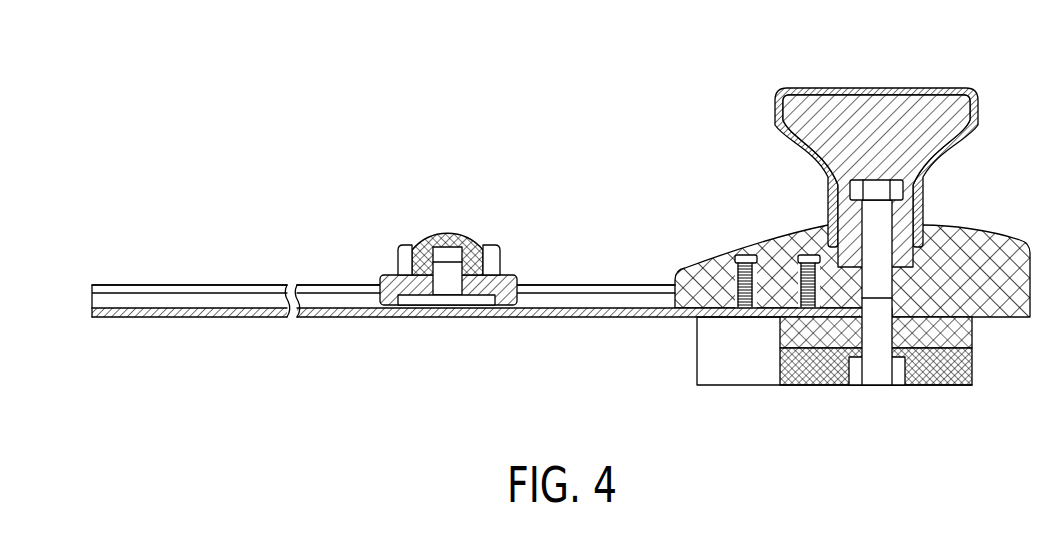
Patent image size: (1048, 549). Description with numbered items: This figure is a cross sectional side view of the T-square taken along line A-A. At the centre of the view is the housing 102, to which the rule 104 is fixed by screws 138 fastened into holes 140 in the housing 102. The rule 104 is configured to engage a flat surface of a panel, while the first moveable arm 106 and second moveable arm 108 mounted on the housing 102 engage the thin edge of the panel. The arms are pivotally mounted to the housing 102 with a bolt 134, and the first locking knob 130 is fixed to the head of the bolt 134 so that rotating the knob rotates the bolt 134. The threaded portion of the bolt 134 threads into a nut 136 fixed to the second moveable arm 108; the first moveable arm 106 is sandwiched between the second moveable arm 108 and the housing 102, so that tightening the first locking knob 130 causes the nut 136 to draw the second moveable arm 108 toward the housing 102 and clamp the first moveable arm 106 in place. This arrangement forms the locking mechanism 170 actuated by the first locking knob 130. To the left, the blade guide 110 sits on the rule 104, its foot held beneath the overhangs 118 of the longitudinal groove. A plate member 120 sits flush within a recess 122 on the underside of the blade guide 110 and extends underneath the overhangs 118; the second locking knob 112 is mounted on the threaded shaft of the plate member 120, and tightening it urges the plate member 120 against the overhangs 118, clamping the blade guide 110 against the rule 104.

The housing 102 is at (998, 242).
The rule 104 is at (163, 284).
The first moveable arm 106 is at (962, 328).
The second moveable arm 108 is at (815, 378).
The blade guide 110 is at (391, 280).
The second locking knob 112 is at (428, 248).
The overhangs 118 is at (224, 289).
The plate member 120 is at (417, 303).
The recess 122 is at (495, 313).
The first locking knob 130 is at (876, 93).
The bolt 134 is at (880, 220).
The nut 136 is at (875, 375).
The screws 138 is at (800, 283).
The holes 140 is at (807, 258).
The locking mechanism 170 is at (996, 84).